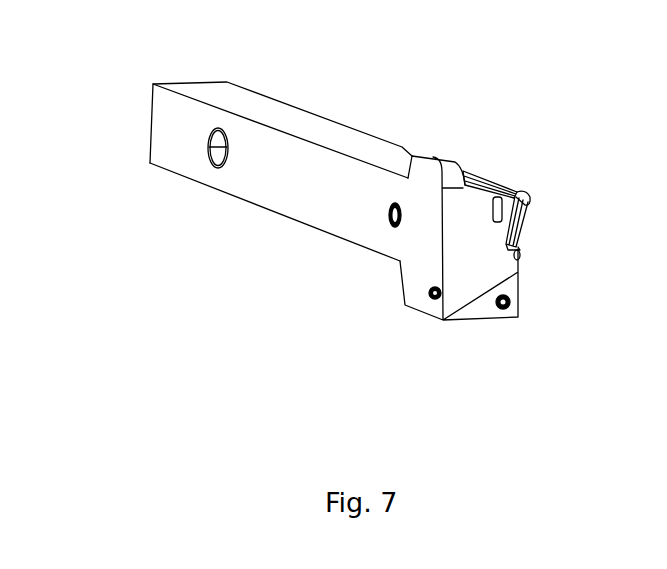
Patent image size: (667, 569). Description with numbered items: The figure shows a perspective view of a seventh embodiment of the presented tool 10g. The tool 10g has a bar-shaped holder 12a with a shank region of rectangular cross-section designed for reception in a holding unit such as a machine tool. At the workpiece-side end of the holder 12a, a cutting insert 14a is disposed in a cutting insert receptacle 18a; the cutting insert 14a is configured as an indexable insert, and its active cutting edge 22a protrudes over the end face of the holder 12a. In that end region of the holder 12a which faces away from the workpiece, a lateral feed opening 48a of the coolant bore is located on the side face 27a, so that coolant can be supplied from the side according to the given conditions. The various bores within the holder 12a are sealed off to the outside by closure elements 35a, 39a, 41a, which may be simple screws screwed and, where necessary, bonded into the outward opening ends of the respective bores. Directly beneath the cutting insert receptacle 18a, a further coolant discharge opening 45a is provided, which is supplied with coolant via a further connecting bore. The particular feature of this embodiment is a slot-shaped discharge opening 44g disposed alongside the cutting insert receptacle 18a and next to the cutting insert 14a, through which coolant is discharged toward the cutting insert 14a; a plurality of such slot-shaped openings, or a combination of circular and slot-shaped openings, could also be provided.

The tool 10g is at (90, 92).
The holder 12a is at (138, 157).
The cutting insert 14a is at (500, 182).
The cutting insert receptacle 18a is at (537, 228).
The active cutting edge 22a is at (530, 195).
The side face 27a is at (290, 201).
The closure element 35a is at (394, 204).
The closure element 39a is at (511, 301).
The closure element 41a is at (430, 298).
The slot-shaped discharge opening 44g is at (482, 210).
The further coolant discharge opening 45a is at (521, 255).
The lateral feed opening 48a is at (208, 153).